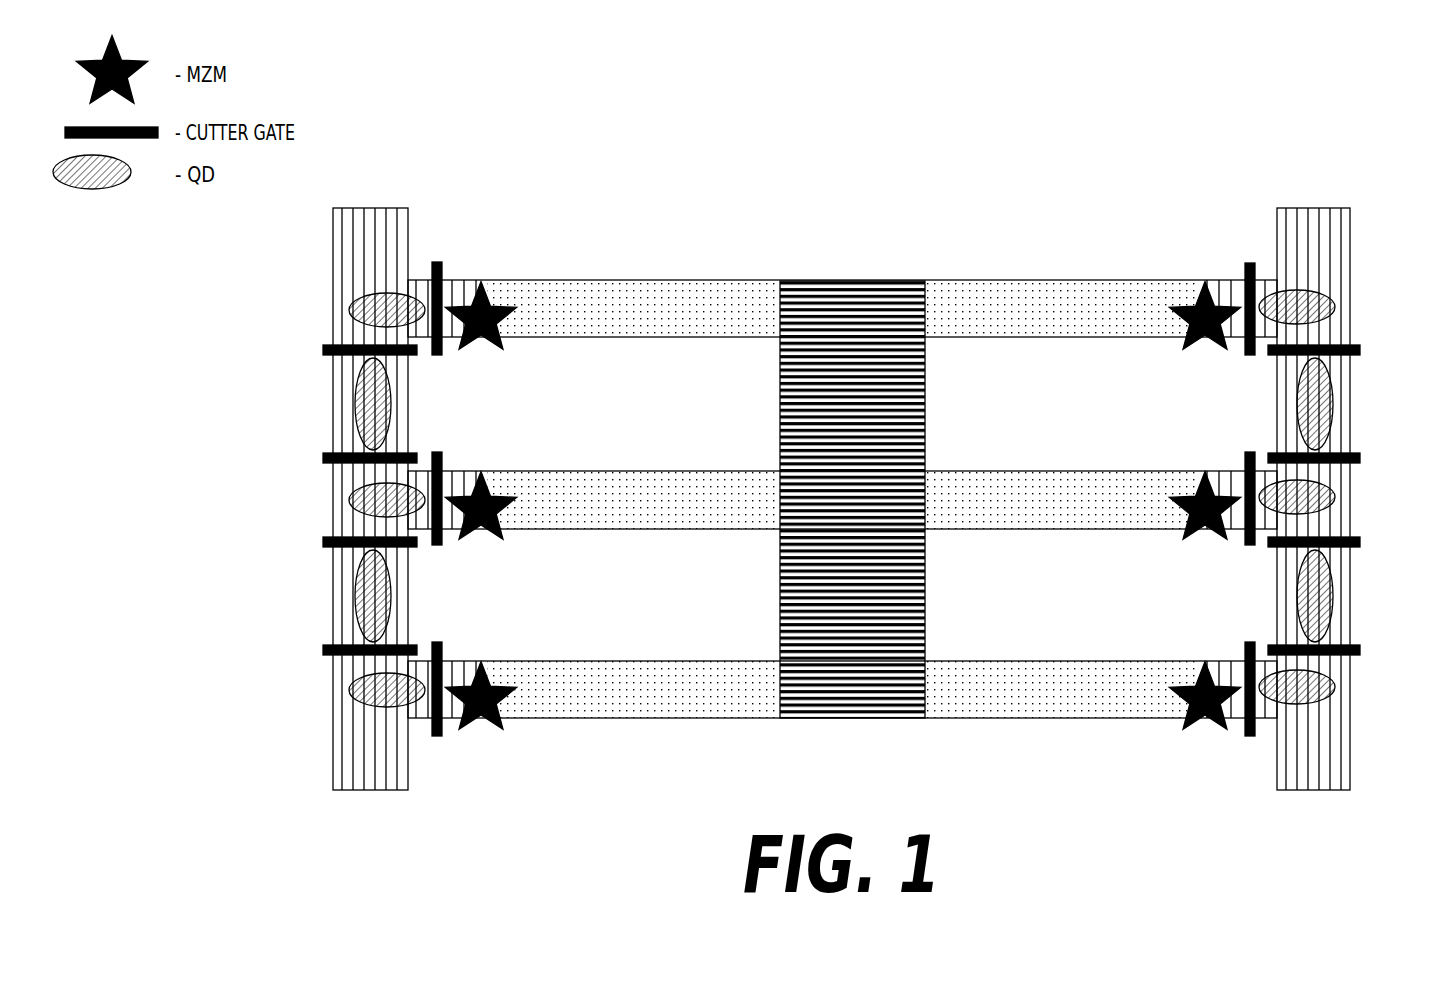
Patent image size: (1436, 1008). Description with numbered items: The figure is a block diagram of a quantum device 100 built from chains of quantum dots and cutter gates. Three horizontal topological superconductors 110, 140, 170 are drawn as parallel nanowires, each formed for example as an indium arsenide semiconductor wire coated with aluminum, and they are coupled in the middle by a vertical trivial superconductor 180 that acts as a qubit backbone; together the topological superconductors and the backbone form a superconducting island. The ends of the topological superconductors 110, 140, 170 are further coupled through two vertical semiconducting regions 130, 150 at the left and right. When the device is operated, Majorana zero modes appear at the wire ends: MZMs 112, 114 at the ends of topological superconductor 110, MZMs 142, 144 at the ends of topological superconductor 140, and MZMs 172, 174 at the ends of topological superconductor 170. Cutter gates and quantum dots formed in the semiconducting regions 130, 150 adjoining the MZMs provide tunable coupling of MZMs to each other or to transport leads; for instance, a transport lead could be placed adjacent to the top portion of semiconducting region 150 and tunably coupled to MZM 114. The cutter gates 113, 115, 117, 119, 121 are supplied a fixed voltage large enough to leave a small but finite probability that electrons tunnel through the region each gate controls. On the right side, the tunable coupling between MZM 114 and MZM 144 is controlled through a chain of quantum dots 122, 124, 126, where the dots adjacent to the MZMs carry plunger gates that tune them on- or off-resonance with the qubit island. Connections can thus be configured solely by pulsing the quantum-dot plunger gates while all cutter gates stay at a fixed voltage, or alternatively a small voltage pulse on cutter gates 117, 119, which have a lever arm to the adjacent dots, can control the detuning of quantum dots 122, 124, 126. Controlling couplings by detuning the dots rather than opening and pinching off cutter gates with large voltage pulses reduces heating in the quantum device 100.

The quantum device 100 is at (867, 812).
The topological superconductor 110 is at (638, 337).
The Majorana zero mode 112 is at (485, 290).
The cutter gate 113 is at (437, 262).
The Majorana zero mode 114 is at (1201, 292).
The cutter gate 115 is at (1250, 263).
The cutter gate 117 is at (1360, 350).
The cutter gate 119 is at (1360, 458).
The cutter gate 121 is at (1250, 452).
The quantum dot 122 is at (1335, 305).
The quantum dot 124 is at (1333, 402).
The quantum dot 126 is at (1335, 493).
The semiconducting region 130 is at (385, 247).
The topological superconductor 140 is at (638, 529).
The Majorana zero mode 142 is at (485, 480).
The Majorana zero mode 144 is at (1201, 482).
The semiconducting region 150 is at (1328, 247).
The topological superconductor 170 is at (638, 718).
The Majorana zero mode 172 is at (485, 670).
The Majorana zero mode 174 is at (1201, 672).
The trivial superconductor 180 is at (925, 425).